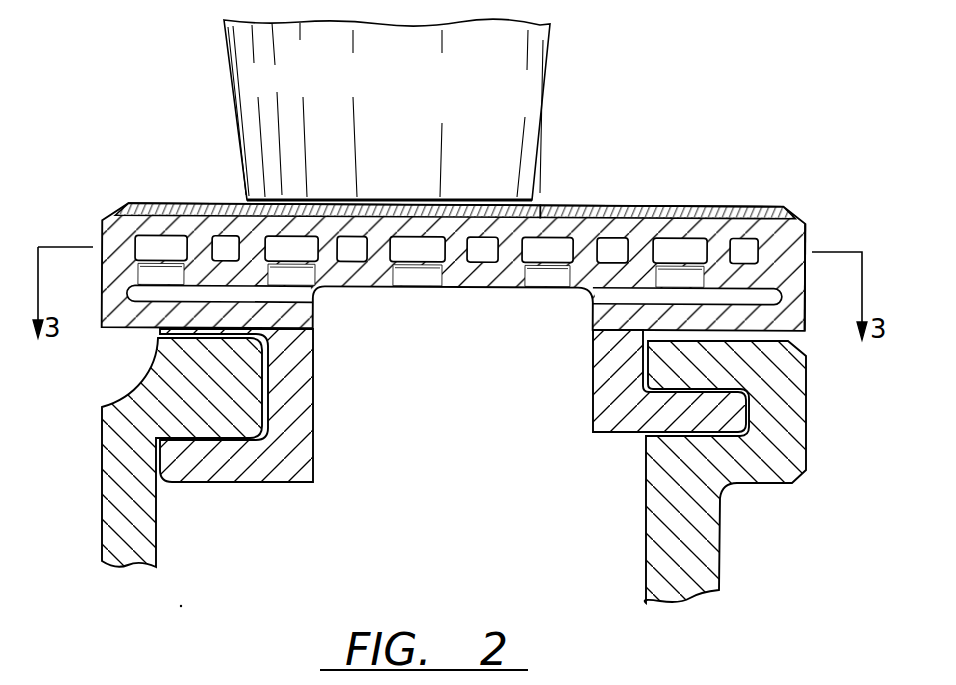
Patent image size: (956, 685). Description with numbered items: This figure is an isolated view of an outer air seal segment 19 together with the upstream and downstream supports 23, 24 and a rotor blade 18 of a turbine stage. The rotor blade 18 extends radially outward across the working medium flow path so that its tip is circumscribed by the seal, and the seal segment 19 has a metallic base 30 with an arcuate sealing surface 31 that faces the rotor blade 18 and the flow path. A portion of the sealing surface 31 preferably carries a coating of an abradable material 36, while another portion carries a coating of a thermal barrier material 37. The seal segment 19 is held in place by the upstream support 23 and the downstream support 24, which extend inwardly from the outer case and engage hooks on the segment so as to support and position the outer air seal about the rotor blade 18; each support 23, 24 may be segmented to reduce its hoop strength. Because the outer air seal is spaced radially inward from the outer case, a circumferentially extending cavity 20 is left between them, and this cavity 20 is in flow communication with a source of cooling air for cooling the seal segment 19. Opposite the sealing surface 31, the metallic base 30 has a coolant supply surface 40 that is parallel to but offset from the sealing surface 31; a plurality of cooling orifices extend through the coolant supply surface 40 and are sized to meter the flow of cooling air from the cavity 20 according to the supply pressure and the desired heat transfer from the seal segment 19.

The rotor blade 18 is at (415, 142).
The seal segment 19 is at (806, 228).
The cavity 20 is at (462, 432).
The upstream support 23 is at (108, 455).
The downstream support 24 is at (710, 540).
The metallic base 30 is at (117, 232).
The sealing surface 31 is at (693, 207).
The abradable material 36 is at (540, 206).
The thermal barrier material 37 is at (182, 206).
The coolant supply surface 40 is at (498, 289).